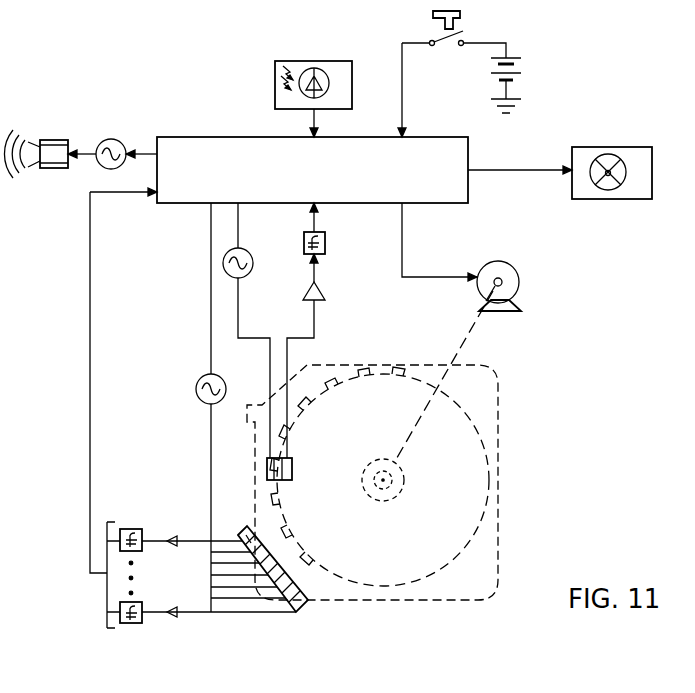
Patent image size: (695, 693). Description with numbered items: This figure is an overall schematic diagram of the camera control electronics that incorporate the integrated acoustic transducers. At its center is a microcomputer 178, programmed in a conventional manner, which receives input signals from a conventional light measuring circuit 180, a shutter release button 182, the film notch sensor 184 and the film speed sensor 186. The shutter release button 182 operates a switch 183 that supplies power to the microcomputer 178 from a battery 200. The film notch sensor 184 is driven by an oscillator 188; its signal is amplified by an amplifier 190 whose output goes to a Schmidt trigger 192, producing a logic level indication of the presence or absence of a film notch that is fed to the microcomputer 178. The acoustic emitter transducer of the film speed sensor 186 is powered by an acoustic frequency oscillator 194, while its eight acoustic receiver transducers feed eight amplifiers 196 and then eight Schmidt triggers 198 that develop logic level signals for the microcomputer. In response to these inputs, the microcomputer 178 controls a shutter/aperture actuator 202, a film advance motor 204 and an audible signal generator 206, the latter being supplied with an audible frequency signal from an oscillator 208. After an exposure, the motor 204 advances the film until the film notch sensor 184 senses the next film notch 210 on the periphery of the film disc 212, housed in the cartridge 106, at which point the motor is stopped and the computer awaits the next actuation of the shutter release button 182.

The film cartridge disc 106 is at (488, 536).
The microcomputer 178 is at (232, 137).
The light measuring circuit 180 is at (275, 78).
The shutter release button 182 is at (433, 14).
The switch 183 is at (465, 33).
The film notch sensor 184 is at (267, 469).
The film speed sensor 186 is at (311, 605).
The oscillator 188 is at (223, 263).
The amplifier 190 is at (325, 290).
The Schmidt trigger 192 is at (326, 243).
The acoustic frequency oscillator 194 is at (196, 390).
The amplifiers 196 is at (172, 538).
The Schmidt triggers 198 is at (140, 529).
The battery 200 is at (523, 82).
The shutter/aperture actuator 202 is at (636, 204).
The film advance motor 204 is at (516, 290).
The audible signal generator 206 is at (53, 140).
The oscillator 208 is at (110, 140).
The film notch 210 is at (292, 486).
The film disc 212 is at (400, 366).